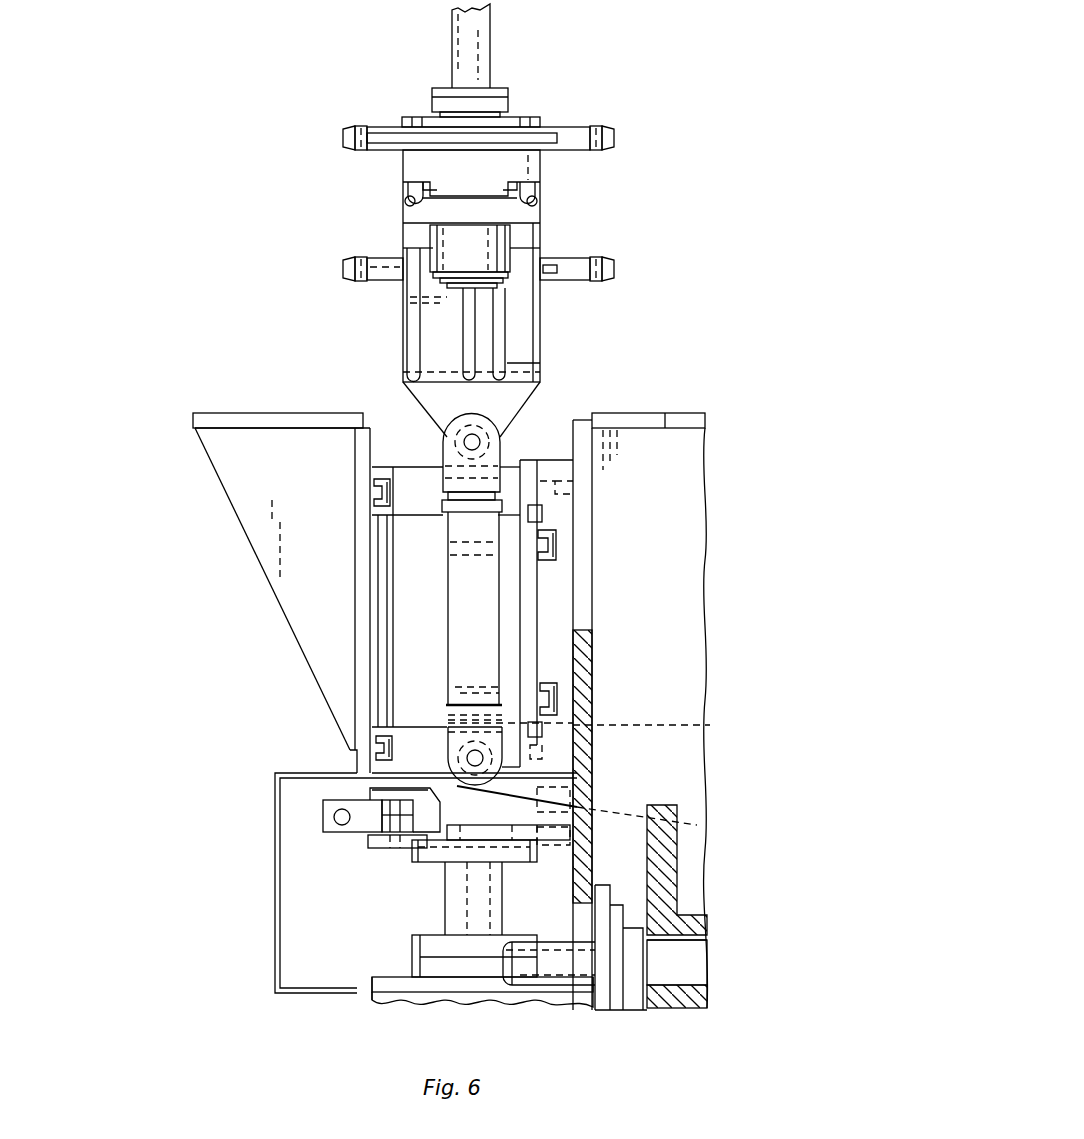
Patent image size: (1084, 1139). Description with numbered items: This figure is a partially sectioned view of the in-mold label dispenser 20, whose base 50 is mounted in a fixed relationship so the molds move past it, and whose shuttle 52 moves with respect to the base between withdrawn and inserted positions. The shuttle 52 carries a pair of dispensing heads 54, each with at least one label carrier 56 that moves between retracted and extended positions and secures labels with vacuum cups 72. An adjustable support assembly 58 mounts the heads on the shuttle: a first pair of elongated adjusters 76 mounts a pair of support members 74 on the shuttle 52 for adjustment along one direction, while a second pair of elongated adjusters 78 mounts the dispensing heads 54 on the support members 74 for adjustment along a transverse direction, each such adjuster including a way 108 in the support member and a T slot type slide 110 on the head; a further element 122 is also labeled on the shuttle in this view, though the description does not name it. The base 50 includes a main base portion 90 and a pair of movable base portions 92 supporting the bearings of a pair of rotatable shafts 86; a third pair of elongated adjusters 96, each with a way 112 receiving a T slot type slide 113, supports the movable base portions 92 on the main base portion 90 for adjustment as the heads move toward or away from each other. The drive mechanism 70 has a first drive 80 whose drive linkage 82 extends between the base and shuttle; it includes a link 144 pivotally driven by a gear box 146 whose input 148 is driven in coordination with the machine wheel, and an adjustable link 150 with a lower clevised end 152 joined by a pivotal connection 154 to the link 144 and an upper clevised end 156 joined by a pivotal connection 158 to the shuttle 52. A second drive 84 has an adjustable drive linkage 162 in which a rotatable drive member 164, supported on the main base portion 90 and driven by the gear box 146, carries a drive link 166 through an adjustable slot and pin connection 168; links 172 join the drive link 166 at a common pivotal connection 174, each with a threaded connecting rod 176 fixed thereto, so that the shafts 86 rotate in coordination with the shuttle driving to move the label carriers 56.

The in-mold label dispenser 20 is at (632, 105).
The base 50 is at (369, 1010).
The shuttle 52 is at (543, 342).
The dispensing head 54 is at (554, 114).
The label carrier 56 is at (358, 152).
The adjustable support assembly 58 is at (292, 528).
The drive mechanism 70 is at (315, 702).
The vacuum cup 72 is at (342, 138).
The support member 74 is at (540, 210).
The first pair of elongated adjusters 76 is at (500, 353).
The second pair of elongated adjusters 78 is at (518, 189).
The first drive 80 is at (404, 638).
The drive linkage 82 is at (440, 621).
The second drive 84 is at (303, 898).
The rotatable shaft 86 is at (434, 893).
The main base portion 90 is at (503, 997).
The movable base portion 92 is at (380, 580).
The third pair of elongated adjusters 96 is at (522, 554).
The way 108 is at (405, 200).
The T slot type slide 110 is at (512, 200).
The way 112 is at (380, 490).
The T slot type slide 113 is at (392, 487).
The cylinder 122 is at (505, 260).
The link 144 is at (645, 722).
The gear box 146 is at (700, 868).
The input 148 is at (672, 1002).
The adjustable link 150 is at (452, 598).
The lower clevised end 152 is at (522, 758).
The pivotal connection 154 is at (475, 762).
The upper clevised end 156 is at (497, 450).
The pivotal connection 158 is at (462, 440).
The adjustable drive linkage 162 is at (344, 852).
The rotatable drive member 164 is at (413, 850).
The drive link 166 is at (480, 833).
The adjustable slot and pin connection 168 is at (472, 898).
The link 172 is at (338, 818).
The common pivotal connection 174 is at (368, 788).
The threaded connecting rod 176 is at (340, 830).